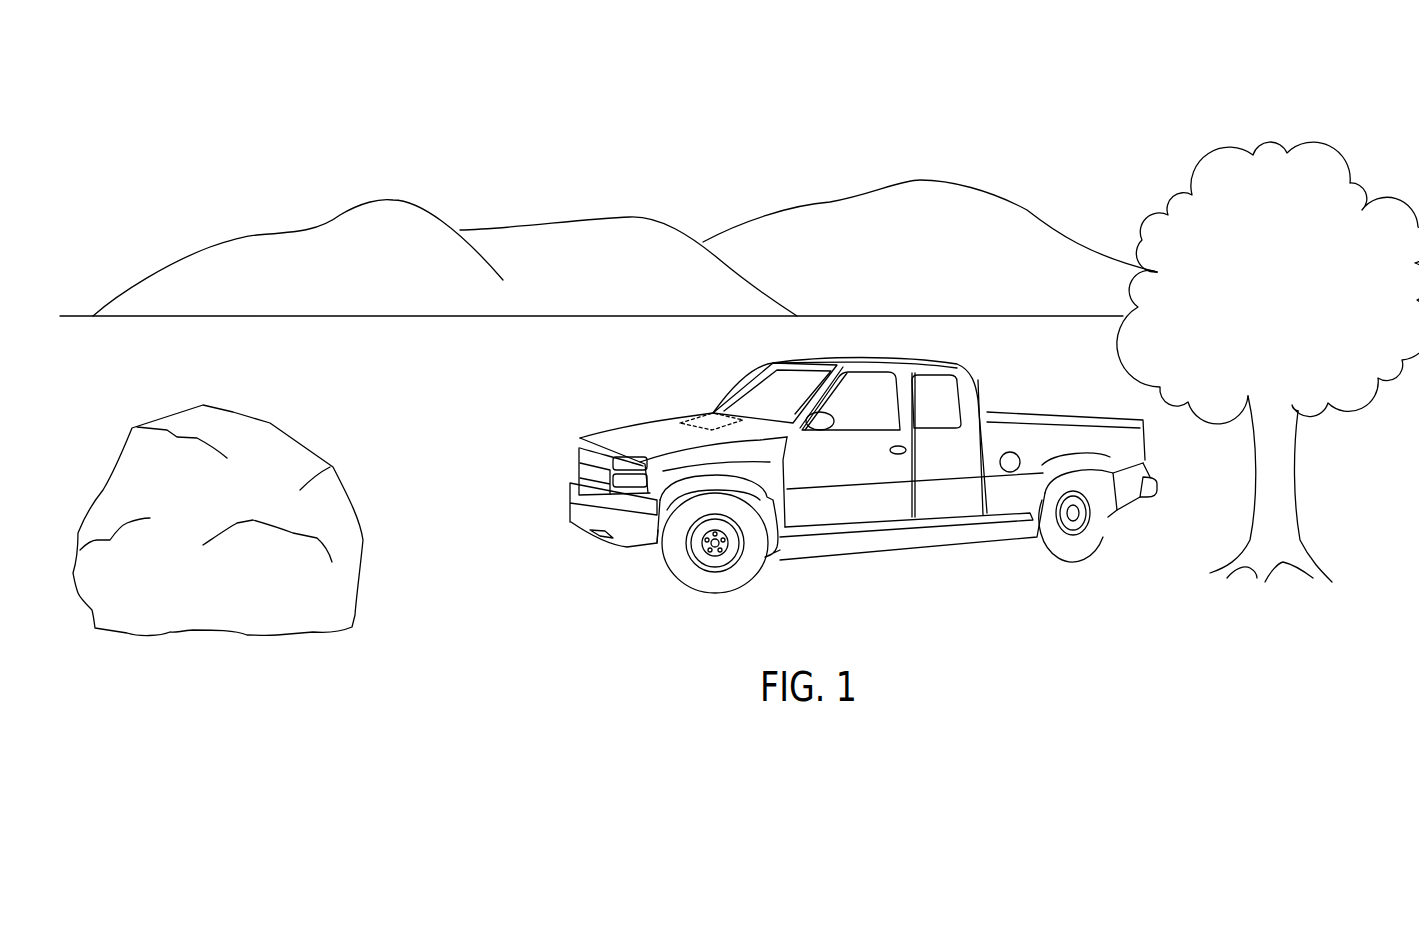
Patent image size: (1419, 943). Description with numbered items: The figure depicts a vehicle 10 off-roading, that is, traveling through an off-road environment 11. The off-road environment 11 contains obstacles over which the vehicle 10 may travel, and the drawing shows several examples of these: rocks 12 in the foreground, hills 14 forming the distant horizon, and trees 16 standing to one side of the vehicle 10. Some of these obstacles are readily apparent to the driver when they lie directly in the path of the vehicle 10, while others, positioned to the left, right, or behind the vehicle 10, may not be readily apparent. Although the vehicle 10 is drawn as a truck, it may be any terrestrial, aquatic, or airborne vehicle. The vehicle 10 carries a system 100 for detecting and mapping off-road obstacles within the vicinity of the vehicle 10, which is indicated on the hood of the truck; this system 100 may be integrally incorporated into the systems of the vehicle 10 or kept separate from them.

The vehicle 10 is at (557, 418).
The off-road environment 11 is at (168, 157).
The rocks 12 is at (272, 423).
The hills 14 is at (617, 216).
The trees 16 is at (1272, 142).
The system for detecting and mapping off-road obstacles 100 is at (710, 422).